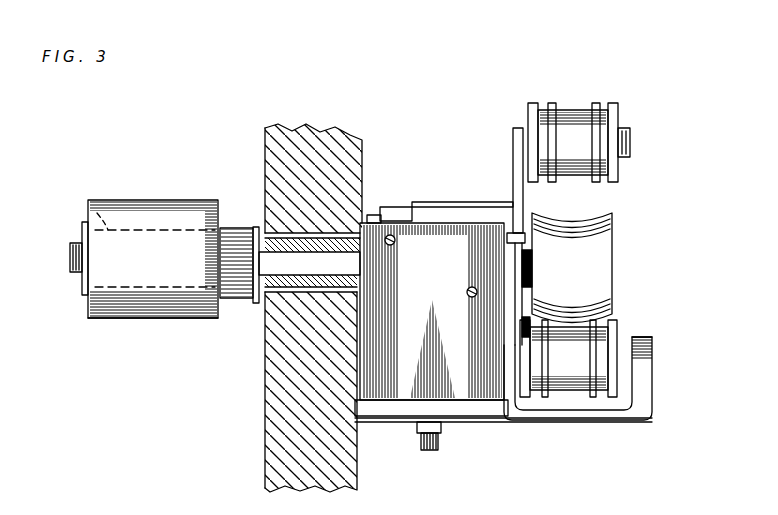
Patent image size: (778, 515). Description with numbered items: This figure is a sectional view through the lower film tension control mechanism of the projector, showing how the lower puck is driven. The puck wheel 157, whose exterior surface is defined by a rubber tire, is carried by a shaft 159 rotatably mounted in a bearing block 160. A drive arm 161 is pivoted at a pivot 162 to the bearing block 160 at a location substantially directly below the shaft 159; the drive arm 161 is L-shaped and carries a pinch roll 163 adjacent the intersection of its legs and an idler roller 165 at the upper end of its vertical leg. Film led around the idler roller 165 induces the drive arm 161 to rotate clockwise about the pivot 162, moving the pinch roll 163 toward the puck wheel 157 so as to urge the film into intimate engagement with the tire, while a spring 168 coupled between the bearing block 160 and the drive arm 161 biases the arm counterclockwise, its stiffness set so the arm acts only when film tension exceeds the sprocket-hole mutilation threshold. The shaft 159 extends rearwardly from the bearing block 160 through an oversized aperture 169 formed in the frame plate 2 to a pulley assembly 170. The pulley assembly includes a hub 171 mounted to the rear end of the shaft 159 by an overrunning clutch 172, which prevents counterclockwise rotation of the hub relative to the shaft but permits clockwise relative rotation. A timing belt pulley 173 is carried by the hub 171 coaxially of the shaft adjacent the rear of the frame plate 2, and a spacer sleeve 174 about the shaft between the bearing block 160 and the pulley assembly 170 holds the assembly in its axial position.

The frame plate 2 is at (331, 146).
The puck wheel 157 is at (612, 265).
The shaft 159 is at (309, 263).
The bearing block 160 is at (440, 304).
The drive arm 161 is at (513, 150).
The pivot 162 is at (654, 338).
The pinch roll 163 is at (568, 358).
The idler roller 165 is at (575, 110).
The spring 168 is at (450, 202).
The oversized aperture 169 is at (268, 286).
The pulley assembly 170 is at (116, 190).
The hub 171 is at (136, 318).
The overrunning clutch 172 is at (96, 212).
The timing belt pulley 173 is at (235, 228).
The spacer sleeve 174 is at (261, 297).